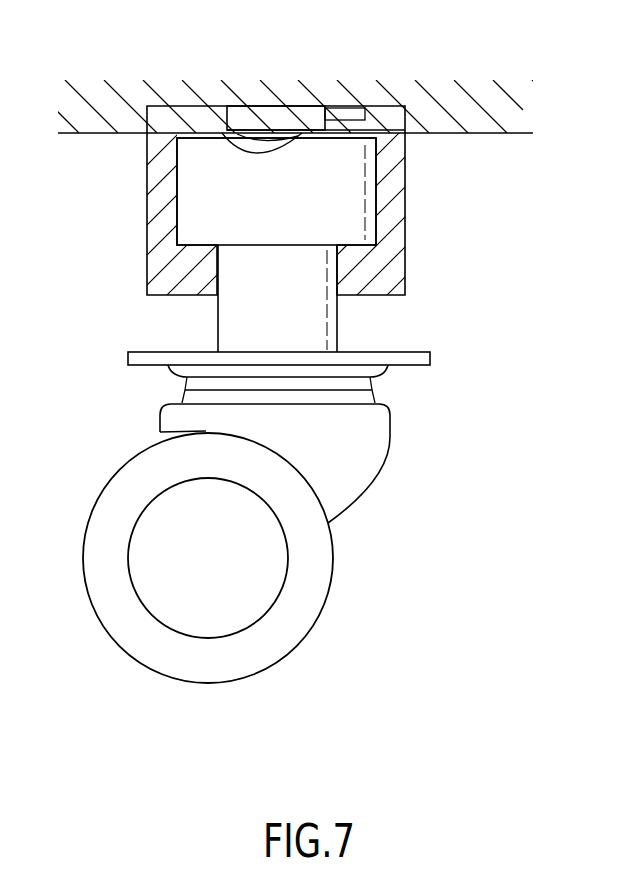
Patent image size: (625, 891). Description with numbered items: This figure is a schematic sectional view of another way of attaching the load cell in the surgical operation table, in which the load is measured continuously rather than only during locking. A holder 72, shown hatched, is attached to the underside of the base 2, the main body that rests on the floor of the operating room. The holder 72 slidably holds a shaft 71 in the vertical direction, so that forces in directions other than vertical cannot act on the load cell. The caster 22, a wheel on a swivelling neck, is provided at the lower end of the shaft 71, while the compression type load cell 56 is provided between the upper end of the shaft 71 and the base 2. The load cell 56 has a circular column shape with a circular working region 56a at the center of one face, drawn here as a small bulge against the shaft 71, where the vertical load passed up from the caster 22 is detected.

The base 2 is at (492, 133).
The caster 22 is at (337, 475).
The load cell 56 is at (300, 118).
The working region 56a is at (222, 135).
The shaft 71 is at (347, 215).
The holder 72 is at (158, 207).